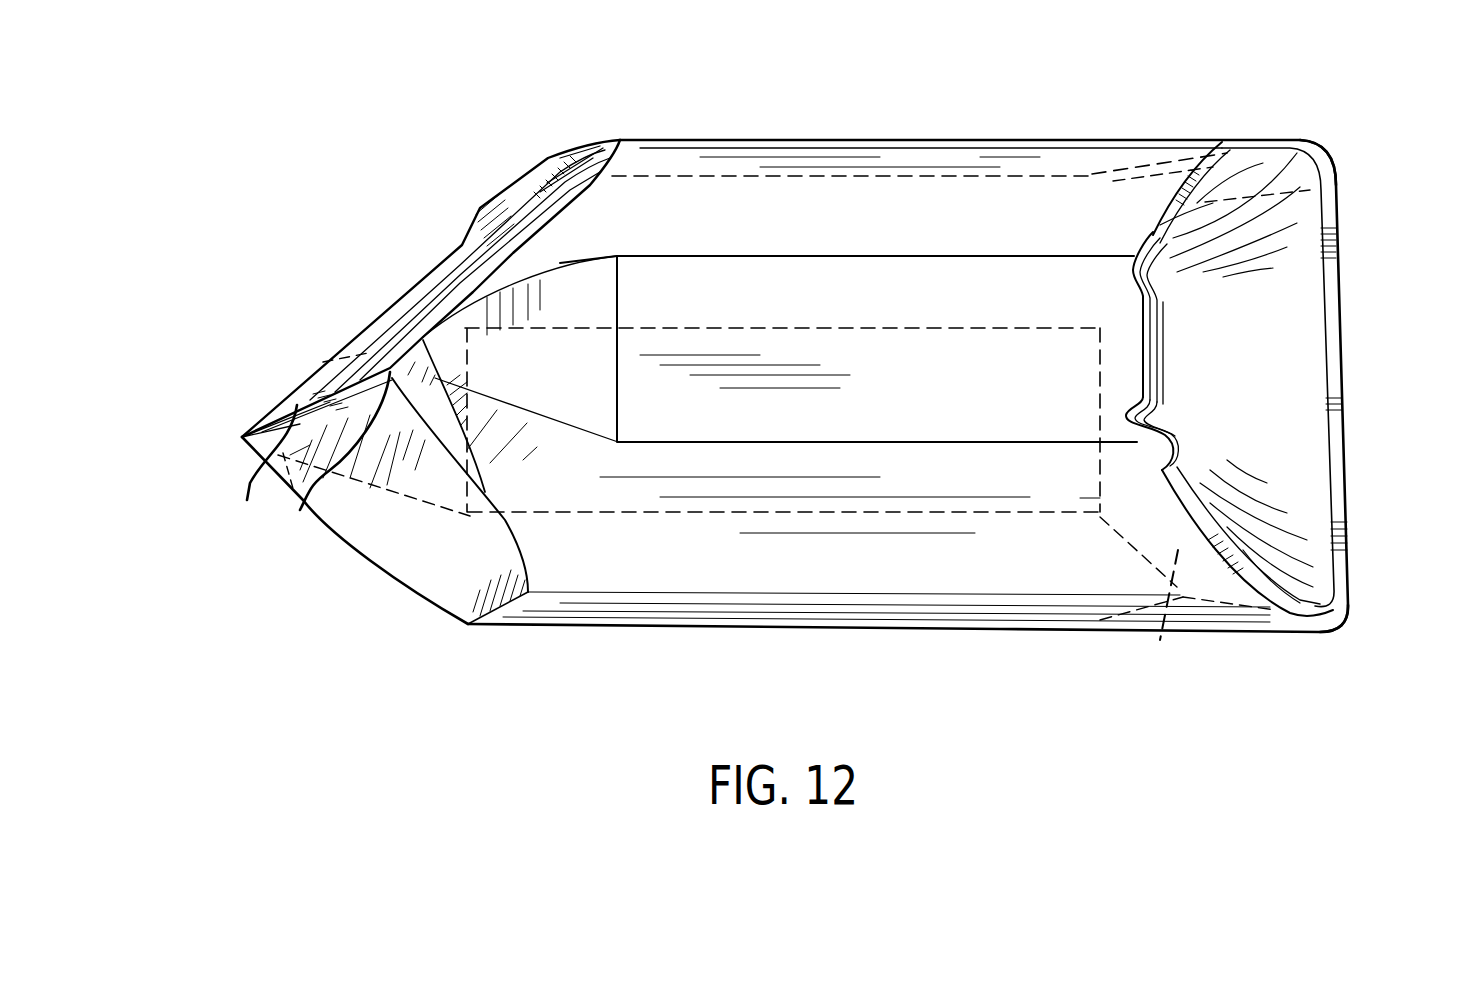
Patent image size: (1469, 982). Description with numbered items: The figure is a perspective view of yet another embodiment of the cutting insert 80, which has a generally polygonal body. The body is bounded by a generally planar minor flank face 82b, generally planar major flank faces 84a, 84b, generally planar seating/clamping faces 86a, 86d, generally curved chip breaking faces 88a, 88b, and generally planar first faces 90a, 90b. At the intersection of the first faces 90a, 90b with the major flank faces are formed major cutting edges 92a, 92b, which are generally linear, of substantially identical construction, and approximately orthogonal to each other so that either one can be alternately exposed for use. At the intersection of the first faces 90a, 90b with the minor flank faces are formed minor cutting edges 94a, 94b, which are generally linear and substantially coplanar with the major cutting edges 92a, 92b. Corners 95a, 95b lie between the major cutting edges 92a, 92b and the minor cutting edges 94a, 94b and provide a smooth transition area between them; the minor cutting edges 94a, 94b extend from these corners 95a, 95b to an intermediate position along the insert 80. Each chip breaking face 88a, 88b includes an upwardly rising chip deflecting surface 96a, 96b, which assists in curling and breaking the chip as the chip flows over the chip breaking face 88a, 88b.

The cutting insert 80 is at (295, 240).
The minor flank face 82b is at (775, 310).
The major flank face 84a is at (365, 562).
The major flank face 84b is at (1160, 640).
The seating/clamping face 86a is at (777, 200).
The seating/clamping face 86d is at (787, 563).
The chip breaking face 88a is at (416, 300).
The chip breaking face 88b is at (1272, 435).
The first face 90a is at (285, 458).
The first face 90b is at (1336, 382).
The major cutting edge 92a is at (242, 437).
The major cutting edge 92b is at (1340, 320).
The minor cutting edge 94a is at (425, 337).
The minor cutting edge 94b is at (1226, 148).
The corner 95a is at (305, 485).
The corner 95b is at (1310, 142).
The chip deflecting surface 96a is at (592, 142).
The chip deflecting surface 96b is at (1152, 240).